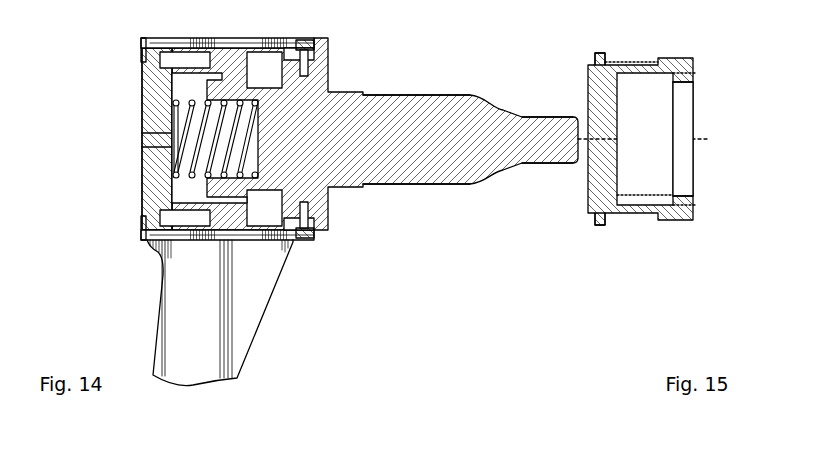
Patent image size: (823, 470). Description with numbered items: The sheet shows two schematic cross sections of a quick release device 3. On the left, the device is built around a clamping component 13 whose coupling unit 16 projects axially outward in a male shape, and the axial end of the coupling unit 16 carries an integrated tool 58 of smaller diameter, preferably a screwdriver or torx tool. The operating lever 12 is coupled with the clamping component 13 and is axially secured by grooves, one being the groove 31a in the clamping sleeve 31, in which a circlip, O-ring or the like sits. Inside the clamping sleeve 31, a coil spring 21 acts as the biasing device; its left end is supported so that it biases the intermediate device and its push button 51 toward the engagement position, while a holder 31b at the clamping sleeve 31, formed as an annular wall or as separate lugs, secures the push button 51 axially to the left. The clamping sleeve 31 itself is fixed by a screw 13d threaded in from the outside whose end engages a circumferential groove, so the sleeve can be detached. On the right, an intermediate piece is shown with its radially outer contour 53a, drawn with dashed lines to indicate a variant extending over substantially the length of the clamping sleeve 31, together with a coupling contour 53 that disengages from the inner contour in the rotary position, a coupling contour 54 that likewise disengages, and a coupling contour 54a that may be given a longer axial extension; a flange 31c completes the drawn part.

In FIG. 14, the valve assembly 3 is at (412, 311).
In FIG. 14, the operating lever 12 is at (167, 328).
In FIG. 14, the clamping component 13 is at (427, 87).
In FIG. 14, the screw 13d is at (309, 39).
In FIG. 14, the coupling unit 16 is at (403, 182).
In FIG. 14, the coil spring 21 is at (160, 160).
In FIG. 14, the clamping sleeve 31 is at (190, 45).
In FIG. 14, the groove 31a is at (297, 237).
In FIG. 14, the holder 31b is at (145, 55).
In FIG. 15, the cap flange 31c is at (590, 223).
In FIG. 14, the push button 51 is at (153, 100).
In FIG. 15, the coupling contour 53 is at (677, 63).
In FIG. 15, the radially outer contour 53a is at (632, 63).
In FIG. 15, the coupling contour 54 is at (683, 80).
In FIG. 15, the coupling contour 54a is at (647, 197).
In FIG. 14, the tool 58 is at (550, 116).